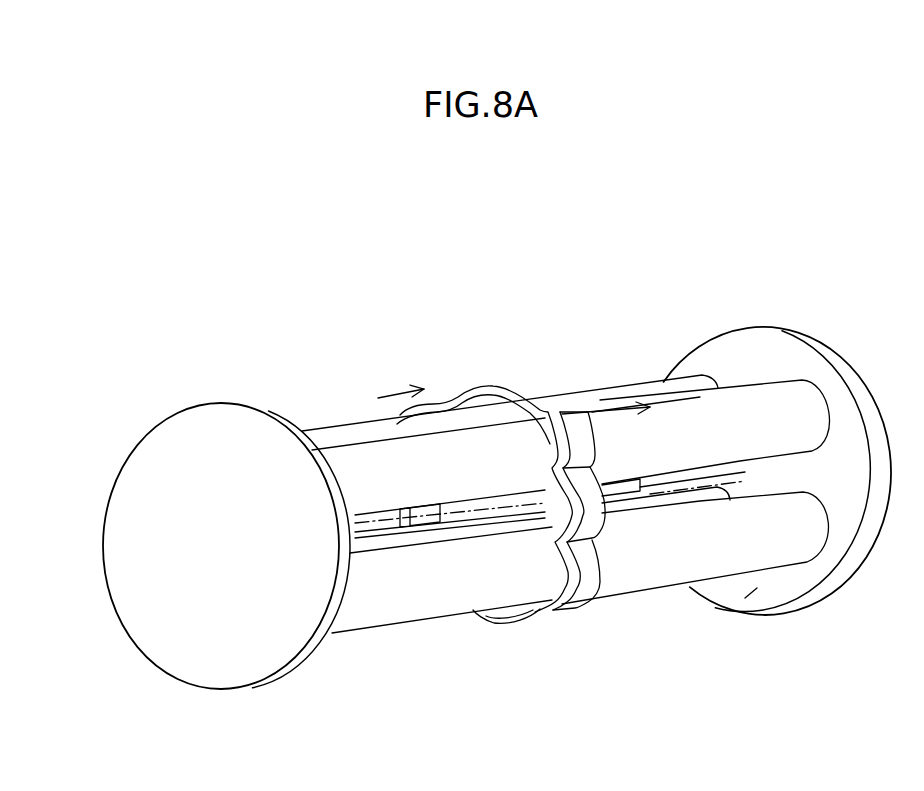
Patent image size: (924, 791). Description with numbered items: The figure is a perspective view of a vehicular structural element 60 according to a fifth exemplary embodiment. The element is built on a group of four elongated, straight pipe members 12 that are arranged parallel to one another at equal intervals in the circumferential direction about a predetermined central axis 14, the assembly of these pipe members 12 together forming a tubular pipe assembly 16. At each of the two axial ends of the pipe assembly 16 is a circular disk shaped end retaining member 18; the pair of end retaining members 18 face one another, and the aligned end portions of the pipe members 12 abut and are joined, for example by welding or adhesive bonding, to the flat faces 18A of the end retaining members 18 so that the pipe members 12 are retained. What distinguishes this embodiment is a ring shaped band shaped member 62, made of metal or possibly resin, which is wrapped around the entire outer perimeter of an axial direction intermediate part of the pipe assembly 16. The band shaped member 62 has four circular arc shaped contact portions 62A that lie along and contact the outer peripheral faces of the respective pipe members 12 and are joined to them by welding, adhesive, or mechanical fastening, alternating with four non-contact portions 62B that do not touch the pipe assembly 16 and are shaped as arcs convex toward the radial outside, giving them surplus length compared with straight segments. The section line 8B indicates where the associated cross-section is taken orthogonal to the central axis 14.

The vehicular structural element 60 is at (654, 250).
The end retaining member 18 is at (232, 401).
The flat face 18A is at (752, 600).
The pipe member 12 is at (358, 436).
The pipe assembly 16 is at (584, 371).
The central axis 14 is at (370, 540).
The line 8B- 8B is at (398, 391).
The band shaped member 62 is at (547, 502).
The contact portion 62A is at (590, 437).
The non-contact portion 62B is at (482, 384).